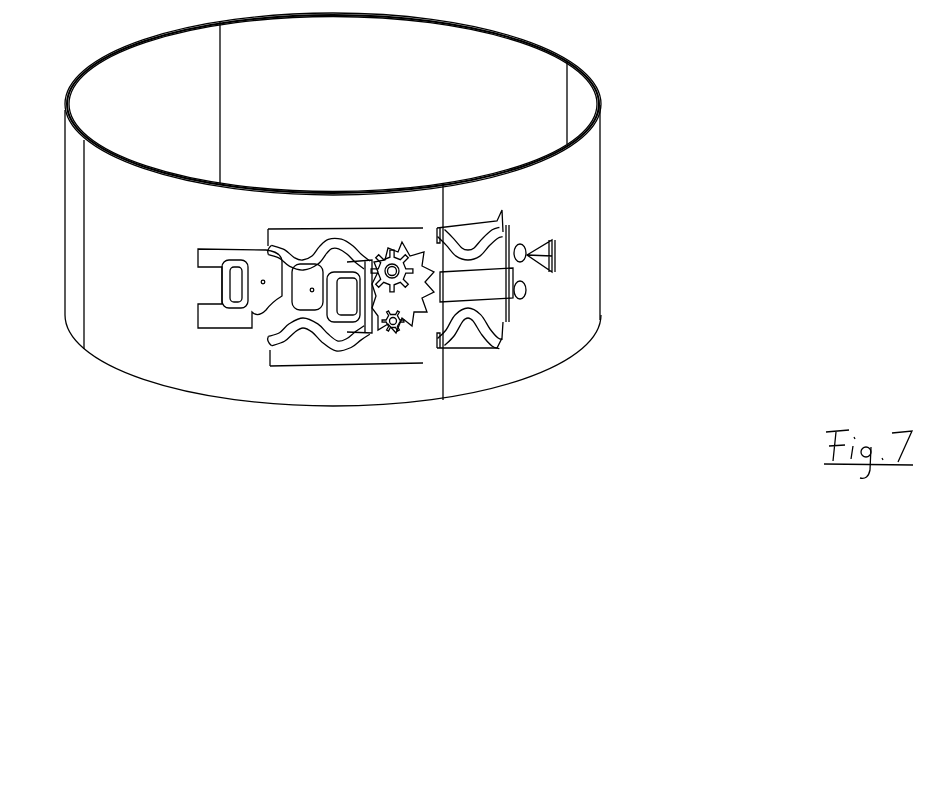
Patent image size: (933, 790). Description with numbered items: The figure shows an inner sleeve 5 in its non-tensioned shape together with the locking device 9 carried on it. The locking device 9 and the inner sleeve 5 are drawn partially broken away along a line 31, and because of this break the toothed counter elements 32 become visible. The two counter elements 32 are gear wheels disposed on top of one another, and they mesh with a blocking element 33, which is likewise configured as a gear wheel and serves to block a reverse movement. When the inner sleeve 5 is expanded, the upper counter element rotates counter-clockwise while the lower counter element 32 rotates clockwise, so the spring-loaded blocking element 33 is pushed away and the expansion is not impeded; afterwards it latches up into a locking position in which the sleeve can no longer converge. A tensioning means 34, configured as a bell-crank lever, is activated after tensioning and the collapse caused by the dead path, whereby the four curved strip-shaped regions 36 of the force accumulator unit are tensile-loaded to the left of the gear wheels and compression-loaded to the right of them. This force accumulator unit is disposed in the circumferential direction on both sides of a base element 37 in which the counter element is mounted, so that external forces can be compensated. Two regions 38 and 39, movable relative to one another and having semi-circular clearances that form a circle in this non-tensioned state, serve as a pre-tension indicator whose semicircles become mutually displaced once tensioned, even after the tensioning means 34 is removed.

The inner sleeve 5 is at (646, 119).
The locking device 9 is at (388, 192).
The line 31 is at (445, 245).
The counter element 32 is at (383, 233).
The blocking element 33 is at (460, 278).
The tensioning means 34 is at (262, 296).
The curved strip-shaped region 36 is at (330, 240).
The base element 37 is at (385, 333).
The region 38 is at (527, 282).
The region 39 is at (525, 235).